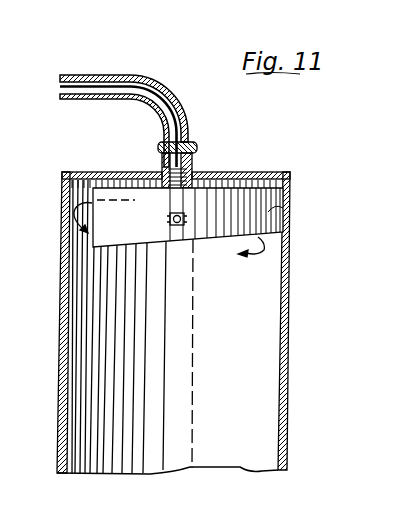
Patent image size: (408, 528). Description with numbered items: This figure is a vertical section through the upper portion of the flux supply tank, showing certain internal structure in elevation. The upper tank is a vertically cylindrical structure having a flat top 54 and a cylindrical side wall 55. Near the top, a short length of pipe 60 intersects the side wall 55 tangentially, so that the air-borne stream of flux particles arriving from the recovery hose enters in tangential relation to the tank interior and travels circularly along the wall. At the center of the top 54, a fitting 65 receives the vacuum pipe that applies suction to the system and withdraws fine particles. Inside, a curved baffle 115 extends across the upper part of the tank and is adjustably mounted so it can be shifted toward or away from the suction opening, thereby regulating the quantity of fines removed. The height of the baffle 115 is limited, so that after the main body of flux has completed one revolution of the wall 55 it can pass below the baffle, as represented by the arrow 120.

The flat top 54 is at (117, 172).
The cylindrical side wall 55 is at (288, 369).
The pipe 60 is at (224, 202).
The fitting 65 is at (146, 60).
The curved baffle 115 is at (205, 238).
The arrow 120 is at (265, 250).